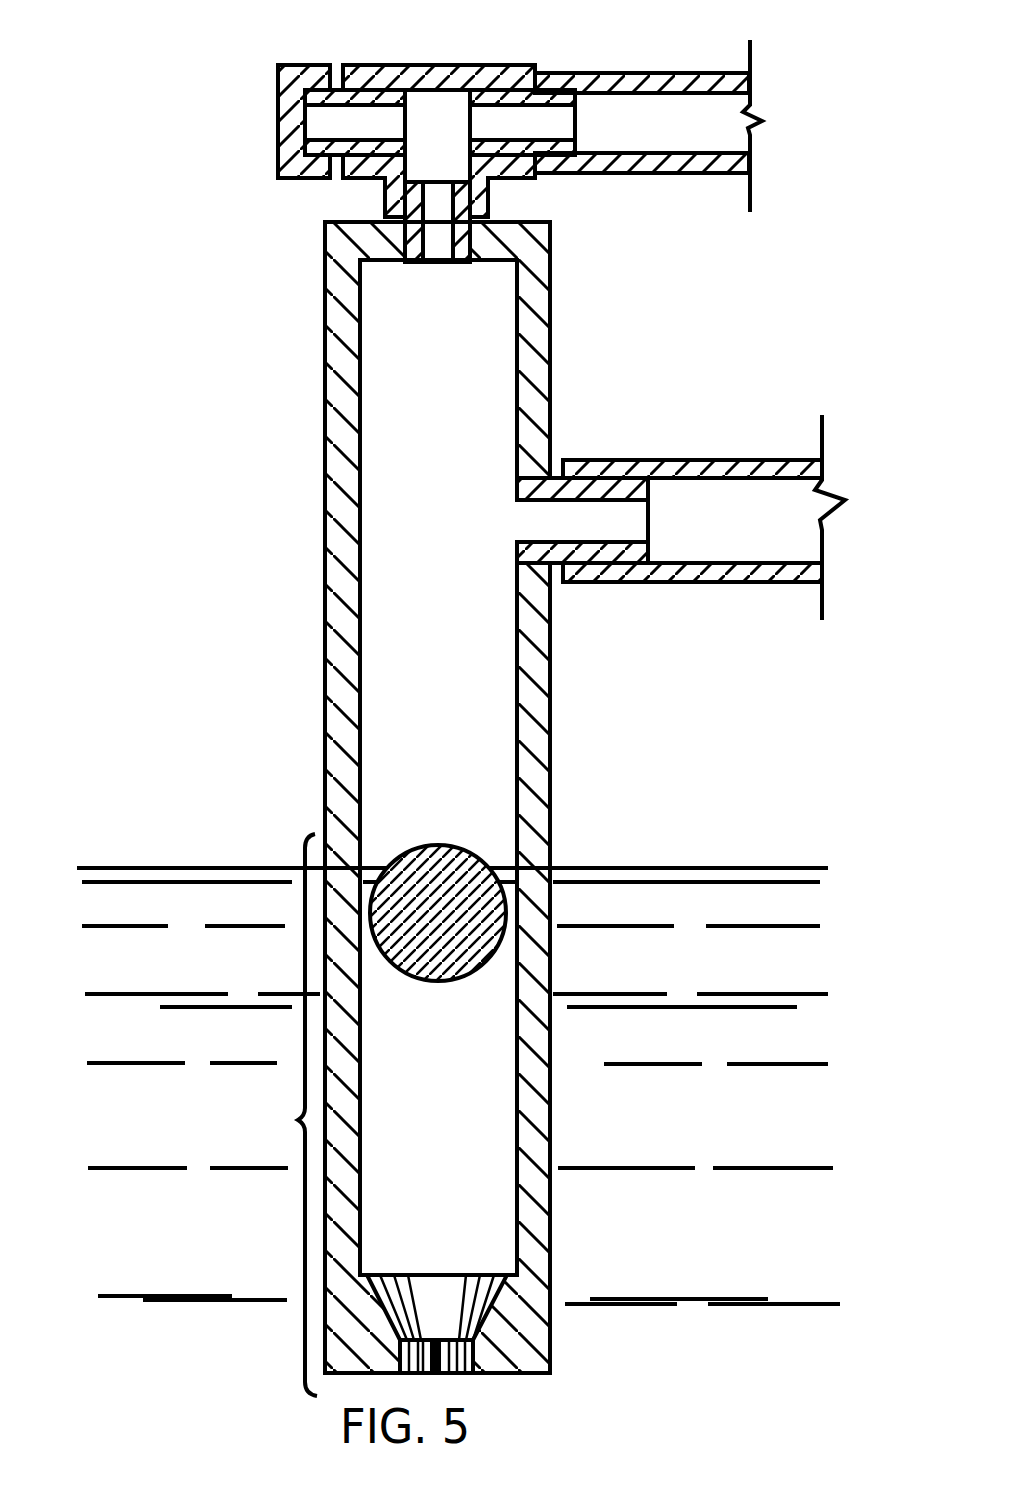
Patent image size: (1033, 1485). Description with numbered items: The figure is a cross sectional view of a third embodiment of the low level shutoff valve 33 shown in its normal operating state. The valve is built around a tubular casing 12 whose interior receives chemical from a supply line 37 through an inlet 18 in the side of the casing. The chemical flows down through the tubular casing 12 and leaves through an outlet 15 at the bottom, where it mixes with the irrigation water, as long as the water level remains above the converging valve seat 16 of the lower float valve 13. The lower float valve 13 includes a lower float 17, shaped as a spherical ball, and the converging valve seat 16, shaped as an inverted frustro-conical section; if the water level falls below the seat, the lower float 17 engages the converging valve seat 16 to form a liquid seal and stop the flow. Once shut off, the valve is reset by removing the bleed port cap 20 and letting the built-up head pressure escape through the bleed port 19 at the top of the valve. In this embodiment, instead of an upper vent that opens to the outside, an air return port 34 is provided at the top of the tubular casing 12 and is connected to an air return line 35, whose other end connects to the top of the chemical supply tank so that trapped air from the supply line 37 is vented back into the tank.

The tubular casing 12 is at (326, 642).
The lower float valve 13 is at (287, 1115).
The outlet 15 is at (435, 1340).
The converging valve seat 16 is at (400, 1291).
The lower float 17 is at (442, 846).
The inlet 18 is at (585, 530).
The bleed port 19 is at (381, 137).
The bleed port cap 20 is at (278, 120).
The low level shutoff valve 33 is at (225, 407).
The air return port 34 is at (537, 137).
The air return line 35 is at (653, 174).
The supply line 37 is at (660, 460).